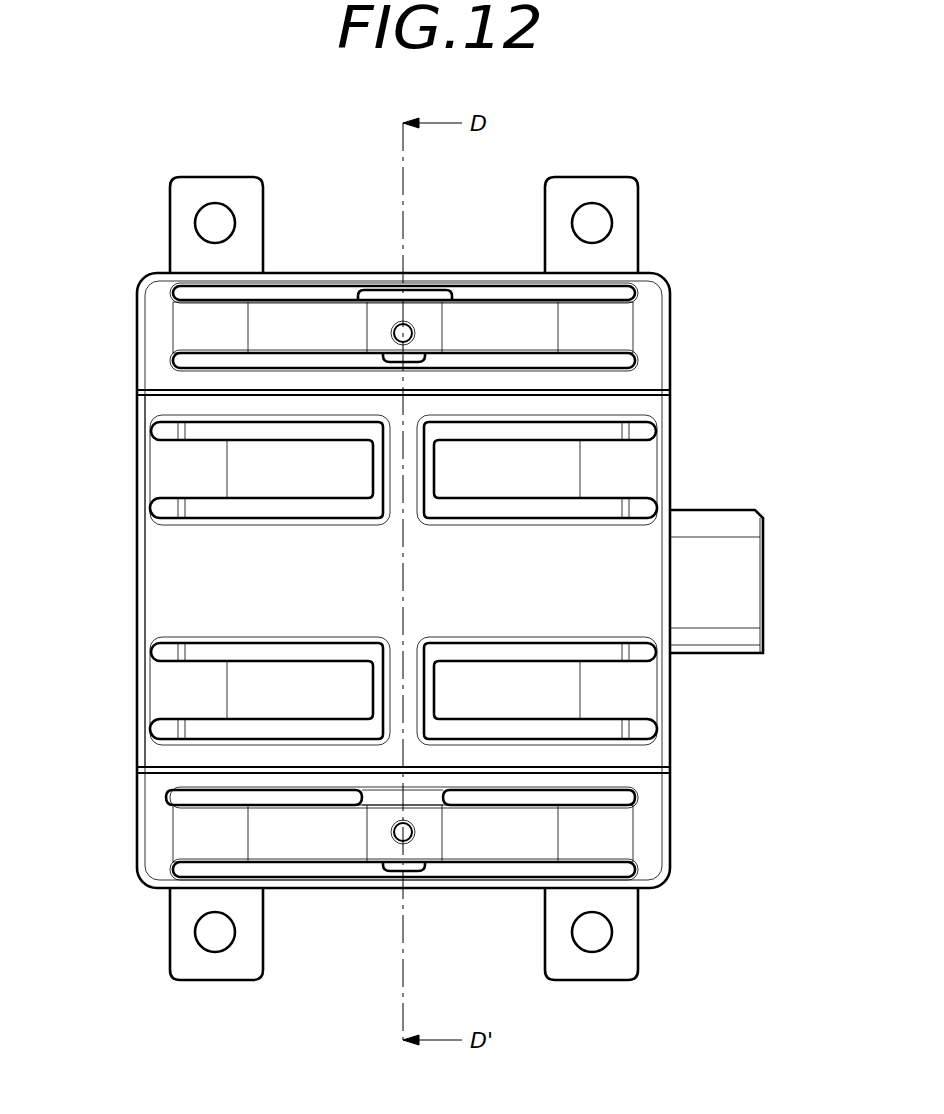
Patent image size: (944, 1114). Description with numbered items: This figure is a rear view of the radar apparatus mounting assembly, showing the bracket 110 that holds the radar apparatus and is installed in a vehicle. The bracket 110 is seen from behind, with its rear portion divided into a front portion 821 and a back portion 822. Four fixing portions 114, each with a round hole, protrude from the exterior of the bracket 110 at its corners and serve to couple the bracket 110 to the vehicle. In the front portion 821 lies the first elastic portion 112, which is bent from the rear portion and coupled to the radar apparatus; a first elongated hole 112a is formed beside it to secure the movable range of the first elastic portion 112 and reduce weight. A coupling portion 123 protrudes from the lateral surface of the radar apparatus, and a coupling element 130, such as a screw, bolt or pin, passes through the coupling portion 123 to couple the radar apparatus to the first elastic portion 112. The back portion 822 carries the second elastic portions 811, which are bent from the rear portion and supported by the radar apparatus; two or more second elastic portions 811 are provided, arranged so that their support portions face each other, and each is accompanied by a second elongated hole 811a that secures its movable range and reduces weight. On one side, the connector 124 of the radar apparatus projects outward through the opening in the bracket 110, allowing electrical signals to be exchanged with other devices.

The bracket 110 is at (138, 273).
The fixing portion 114 is at (213, 190).
The first elastic portion 112 is at (487, 317).
The first elongated hole 112a is at (310, 293).
The coupling portion 123 is at (425, 292).
The coupling element 130 is at (395, 332).
The connector 124 is at (743, 583).
The front portion 821 is at (160, 328).
The back portion 822 is at (160, 583).
The second elastic portion 811 is at (565, 470).
The second elongated hole 811a is at (563, 430).